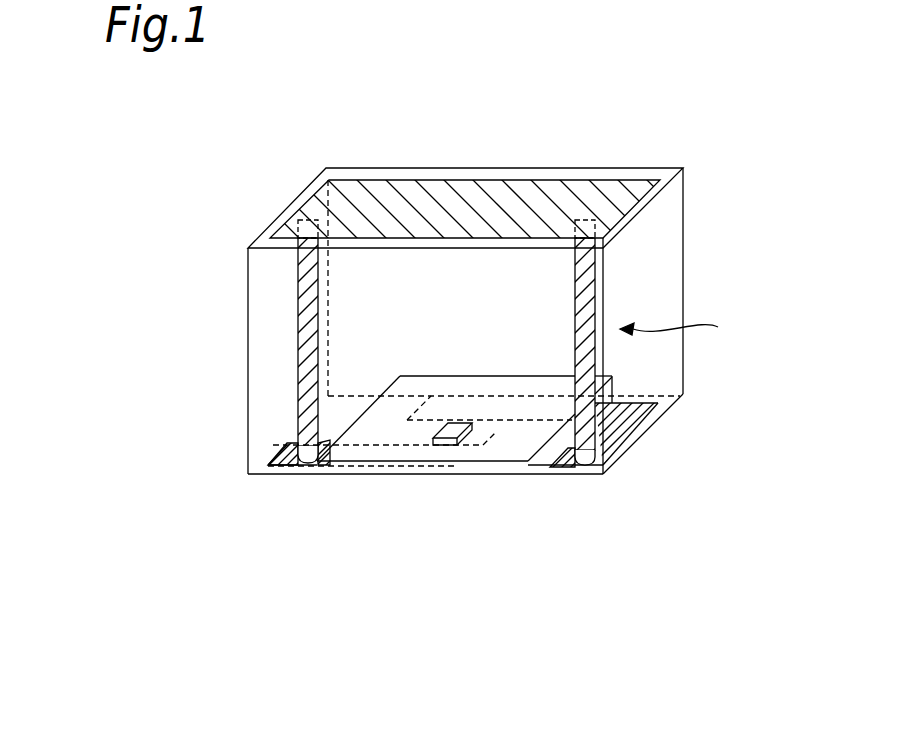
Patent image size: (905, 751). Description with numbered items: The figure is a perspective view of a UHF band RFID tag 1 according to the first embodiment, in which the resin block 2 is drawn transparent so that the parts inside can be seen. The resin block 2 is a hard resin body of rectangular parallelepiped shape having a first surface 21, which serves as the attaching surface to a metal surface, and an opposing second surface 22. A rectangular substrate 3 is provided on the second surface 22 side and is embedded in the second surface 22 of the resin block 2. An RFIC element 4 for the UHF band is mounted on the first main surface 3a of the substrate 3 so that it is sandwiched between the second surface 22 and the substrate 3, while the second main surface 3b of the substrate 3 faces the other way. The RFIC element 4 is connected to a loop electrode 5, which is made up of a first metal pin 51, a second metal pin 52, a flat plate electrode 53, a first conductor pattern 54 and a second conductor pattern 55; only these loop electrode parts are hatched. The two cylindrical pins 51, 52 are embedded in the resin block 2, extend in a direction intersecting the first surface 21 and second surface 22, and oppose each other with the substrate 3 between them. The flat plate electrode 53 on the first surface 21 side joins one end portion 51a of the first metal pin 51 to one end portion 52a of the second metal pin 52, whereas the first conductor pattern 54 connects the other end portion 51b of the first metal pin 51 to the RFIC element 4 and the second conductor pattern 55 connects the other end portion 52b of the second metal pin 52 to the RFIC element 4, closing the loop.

The UHF band RFID tag 1 is at (197, 141).
The resin block 2 is at (671, 207).
The first surface 21 is at (648, 168).
The second surface 22 is at (290, 432).
The substrate 3 is at (500, 465).
The first main surface 3a is at (374, 422).
The second main surface 3b is at (437, 470).
The RFIC element 4 is at (453, 444).
The loop electrode 5 is at (682, 323).
The first metal pin 51 is at (299, 326).
The one end portion of the first metal pin 51a is at (300, 222).
The other end portion of the first metal pin 51b is at (308, 460).
The second metal pin 52 is at (594, 289).
The one end portion of the second metal pin 52a is at (586, 220).
The other end portion of the second metal pin 52b is at (580, 468).
The flat plate electrode 53 is at (375, 190).
The first conductor pattern 54 is at (296, 464).
The second conductor pattern 55 is at (641, 409).